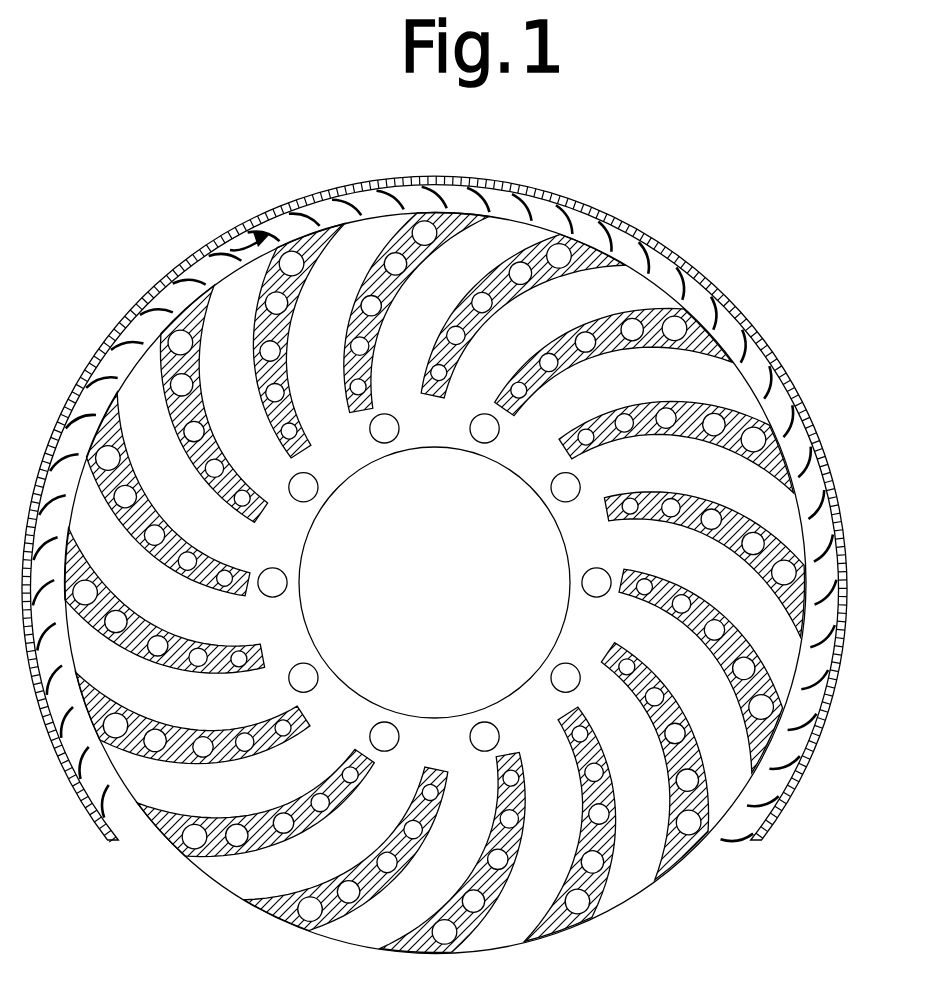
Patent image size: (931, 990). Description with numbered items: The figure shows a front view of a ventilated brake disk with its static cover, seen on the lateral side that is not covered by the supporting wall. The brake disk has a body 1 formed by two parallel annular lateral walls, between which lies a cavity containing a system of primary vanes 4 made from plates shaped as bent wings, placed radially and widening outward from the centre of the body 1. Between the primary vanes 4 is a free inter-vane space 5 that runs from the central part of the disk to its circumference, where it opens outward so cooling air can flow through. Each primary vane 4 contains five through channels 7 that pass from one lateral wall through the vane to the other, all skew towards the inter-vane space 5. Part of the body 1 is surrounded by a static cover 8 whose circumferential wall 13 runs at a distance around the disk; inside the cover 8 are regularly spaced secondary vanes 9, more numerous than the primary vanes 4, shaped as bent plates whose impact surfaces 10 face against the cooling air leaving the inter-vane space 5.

The body 1 is at (500, 945).
The primary vanes 4 is at (667, 853).
The inter-vane space 5 is at (370, 915).
The through channels 7 is at (230, 836).
The static cover 8 is at (434, 491).
The secondary vanes 9 is at (777, 383).
The impact surfaces 10 is at (230, 250).
The circumferential wall 13 is at (717, 288).